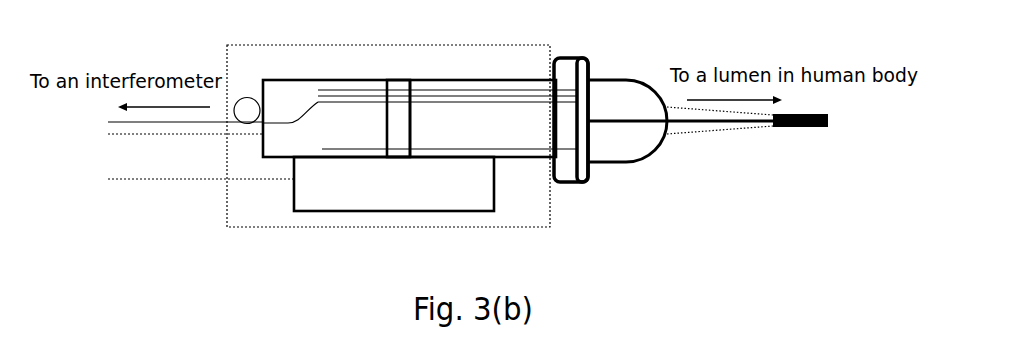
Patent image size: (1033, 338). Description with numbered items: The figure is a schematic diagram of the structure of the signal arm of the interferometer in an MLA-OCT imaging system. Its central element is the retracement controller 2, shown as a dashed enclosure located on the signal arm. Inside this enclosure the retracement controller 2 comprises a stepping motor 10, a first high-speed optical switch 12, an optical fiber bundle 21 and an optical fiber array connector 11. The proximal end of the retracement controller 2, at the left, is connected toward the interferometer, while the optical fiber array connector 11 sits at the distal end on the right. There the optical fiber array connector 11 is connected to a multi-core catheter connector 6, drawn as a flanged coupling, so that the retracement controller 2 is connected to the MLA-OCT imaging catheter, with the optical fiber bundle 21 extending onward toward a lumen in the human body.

The retracement controller 2 is at (448, 227).
The multi-core catheter connector 6 is at (588, 167).
The stepping motor 10 is at (394, 184).
The optical fiber array connector 11 is at (447, 118).
The first high-speed optical switch 12 is at (336, 118).
The optical fiber bundle 21 is at (678, 122).